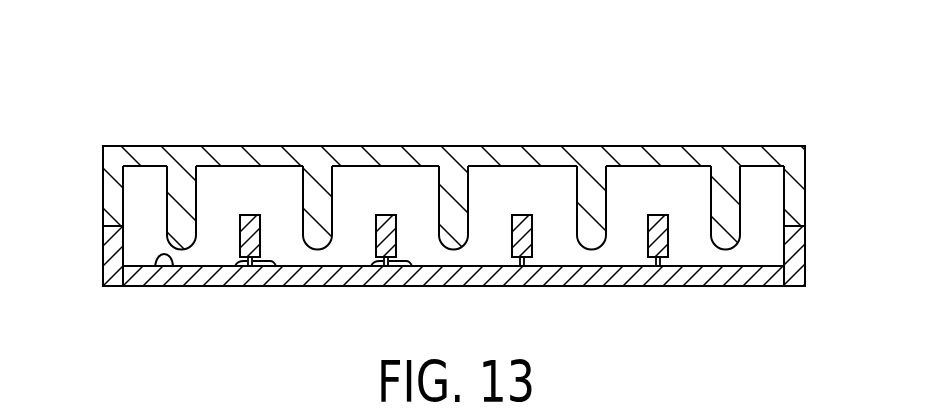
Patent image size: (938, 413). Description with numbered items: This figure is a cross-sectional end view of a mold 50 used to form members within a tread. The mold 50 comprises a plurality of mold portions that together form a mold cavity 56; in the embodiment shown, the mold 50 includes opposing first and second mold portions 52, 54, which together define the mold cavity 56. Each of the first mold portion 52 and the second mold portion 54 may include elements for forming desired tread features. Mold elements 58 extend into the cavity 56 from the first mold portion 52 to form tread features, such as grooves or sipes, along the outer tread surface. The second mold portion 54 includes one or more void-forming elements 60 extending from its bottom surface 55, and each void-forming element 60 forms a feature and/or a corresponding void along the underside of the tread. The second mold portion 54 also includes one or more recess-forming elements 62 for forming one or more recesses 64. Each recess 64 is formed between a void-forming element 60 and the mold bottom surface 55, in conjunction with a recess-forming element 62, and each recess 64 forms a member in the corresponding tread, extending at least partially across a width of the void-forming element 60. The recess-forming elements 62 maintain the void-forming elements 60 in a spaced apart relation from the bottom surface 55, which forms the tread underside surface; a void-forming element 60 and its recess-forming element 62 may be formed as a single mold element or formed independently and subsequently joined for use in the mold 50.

The mold 50 is at (73, 119).
The first mold portion 52 is at (185, 146).
The second mold portion 54 is at (117, 287).
The bottom surface 55 is at (172, 268).
The mold cavity 56 is at (245, 183).
The mold elements 58 is at (333, 203).
The void-forming element 60 is at (260, 223).
The recess-forming element 62 is at (249, 265).
The recess 64 is at (273, 263).